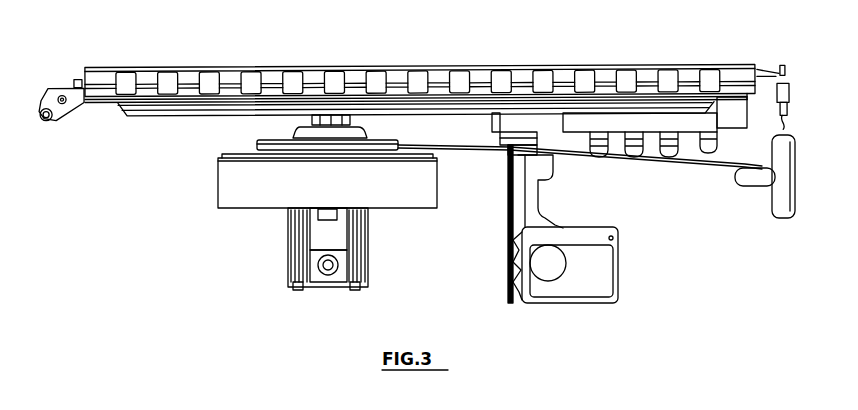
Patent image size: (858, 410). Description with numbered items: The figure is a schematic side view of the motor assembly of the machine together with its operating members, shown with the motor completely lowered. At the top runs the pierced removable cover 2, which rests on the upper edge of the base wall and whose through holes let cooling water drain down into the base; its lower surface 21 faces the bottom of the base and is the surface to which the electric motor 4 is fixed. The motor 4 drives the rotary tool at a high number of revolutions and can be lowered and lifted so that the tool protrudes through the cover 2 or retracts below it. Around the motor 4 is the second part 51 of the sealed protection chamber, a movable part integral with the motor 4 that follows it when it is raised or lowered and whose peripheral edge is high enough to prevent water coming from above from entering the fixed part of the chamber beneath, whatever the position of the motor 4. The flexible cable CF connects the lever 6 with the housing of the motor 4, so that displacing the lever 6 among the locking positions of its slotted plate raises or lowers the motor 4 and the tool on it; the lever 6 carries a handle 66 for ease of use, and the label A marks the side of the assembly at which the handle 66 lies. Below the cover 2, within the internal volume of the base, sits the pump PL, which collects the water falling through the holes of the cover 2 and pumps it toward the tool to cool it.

The pierced removable cover 2 is at (265, 68).
The lower surface 21 is at (156, 118).
The second part of the sealed chamber 51 is at (223, 188).
The electric motor 4 is at (278, 257).
The flexible cable CF is at (493, 150).
The lever 6 is at (708, 159).
The handle 66 is at (755, 188).
The pump PL is at (595, 317).
The viewing direction A is at (823, 187).